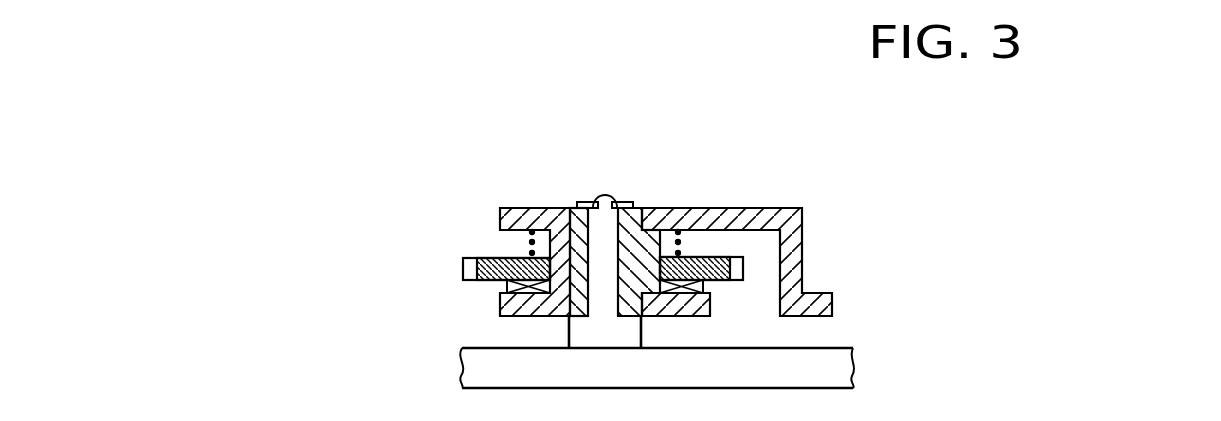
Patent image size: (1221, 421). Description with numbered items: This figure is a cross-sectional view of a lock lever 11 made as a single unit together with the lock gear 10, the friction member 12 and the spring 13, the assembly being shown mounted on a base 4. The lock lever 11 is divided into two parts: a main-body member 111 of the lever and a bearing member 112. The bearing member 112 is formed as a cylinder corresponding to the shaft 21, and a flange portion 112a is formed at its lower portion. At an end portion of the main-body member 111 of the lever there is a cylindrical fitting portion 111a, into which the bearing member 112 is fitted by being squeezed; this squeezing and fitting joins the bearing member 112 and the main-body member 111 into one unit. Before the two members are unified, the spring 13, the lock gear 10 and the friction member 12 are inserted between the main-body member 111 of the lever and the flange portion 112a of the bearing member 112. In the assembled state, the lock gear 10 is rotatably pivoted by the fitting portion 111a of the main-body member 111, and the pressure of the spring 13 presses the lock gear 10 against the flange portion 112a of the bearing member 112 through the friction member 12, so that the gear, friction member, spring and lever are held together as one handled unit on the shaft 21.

The base plate 4 is at (828, 353).
The lock gear 10 is at (497, 258).
The lock lever 11 is at (654, 245).
The friction member 12 is at (492, 290).
The spring 13 is at (697, 210).
The shaft 21 is at (600, 198).
The main-body member of lever 111 is at (755, 207).
The cylindrical fitting portion 111a is at (653, 208).
The bearing member 112 is at (498, 303).
The flange portion 112a is at (523, 317).